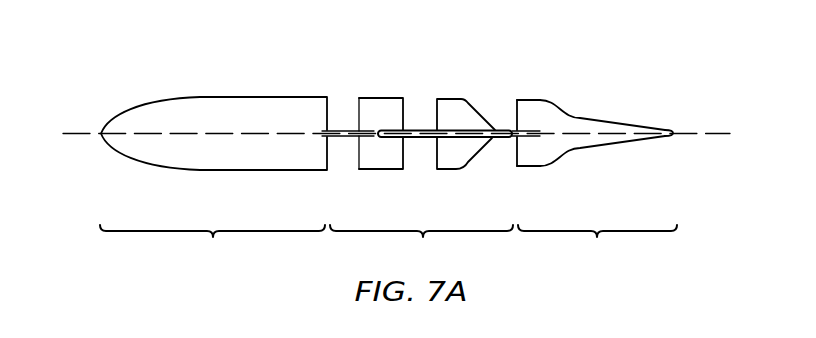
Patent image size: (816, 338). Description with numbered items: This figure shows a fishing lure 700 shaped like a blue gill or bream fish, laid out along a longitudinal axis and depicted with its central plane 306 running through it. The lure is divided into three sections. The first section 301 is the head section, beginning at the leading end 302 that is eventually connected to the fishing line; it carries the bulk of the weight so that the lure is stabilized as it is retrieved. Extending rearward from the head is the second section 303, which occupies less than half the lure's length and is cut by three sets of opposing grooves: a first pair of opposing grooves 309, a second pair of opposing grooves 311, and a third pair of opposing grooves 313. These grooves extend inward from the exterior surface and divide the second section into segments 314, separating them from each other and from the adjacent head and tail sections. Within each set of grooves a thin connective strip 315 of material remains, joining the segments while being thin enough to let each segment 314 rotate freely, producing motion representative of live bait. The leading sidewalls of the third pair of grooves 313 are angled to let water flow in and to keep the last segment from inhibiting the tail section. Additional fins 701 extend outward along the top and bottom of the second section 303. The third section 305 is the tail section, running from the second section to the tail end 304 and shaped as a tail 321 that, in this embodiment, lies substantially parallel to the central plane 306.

The fishing lure 700 is at (299, 59).
The first section 301 is at (213, 180).
The leading end 302 is at (102, 124).
The second section 303 is at (421, 244).
The tail end 304 is at (673, 136).
The third section 305 is at (597, 182).
The central plane 306 is at (704, 128).
The first pair of opposing grooves 309 is at (343, 166).
The second pair of opposing grooves 311 is at (421, 165).
The third pair of opposing grooves 313 is at (503, 163).
The segment 314 is at (378, 97).
The connective strip 315 is at (345, 130).
The tail 321 is at (621, 121).
The fins 701 is at (468, 138).